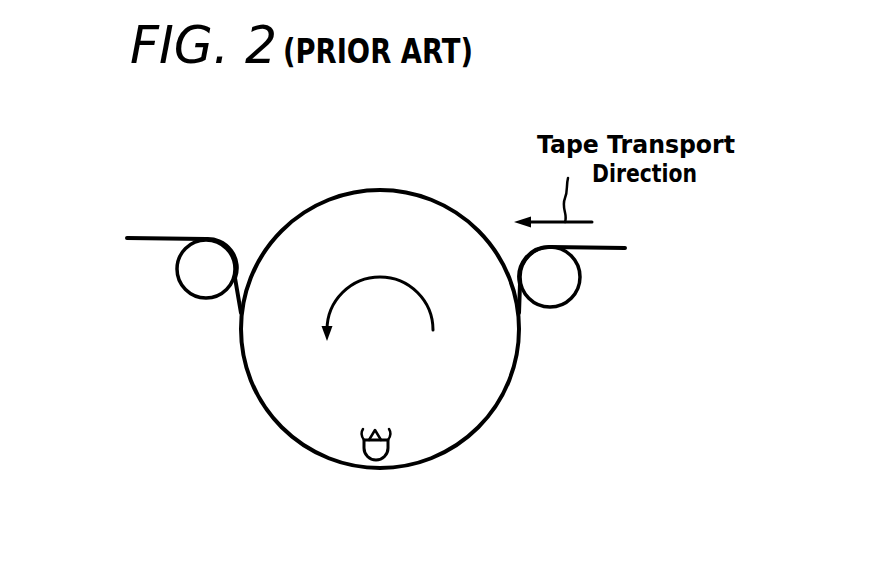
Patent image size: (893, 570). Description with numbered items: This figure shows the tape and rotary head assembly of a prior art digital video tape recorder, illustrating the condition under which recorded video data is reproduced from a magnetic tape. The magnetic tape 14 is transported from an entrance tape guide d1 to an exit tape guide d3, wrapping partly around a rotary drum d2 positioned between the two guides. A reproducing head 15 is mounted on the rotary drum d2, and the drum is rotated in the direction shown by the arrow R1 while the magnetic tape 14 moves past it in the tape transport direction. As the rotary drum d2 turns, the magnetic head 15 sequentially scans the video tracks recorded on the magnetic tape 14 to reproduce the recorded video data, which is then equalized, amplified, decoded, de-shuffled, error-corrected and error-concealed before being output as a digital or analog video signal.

The magnetic tape 14 is at (152, 235).
The rotary drum d2 is at (330, 212).
The exit tape guide d3 is at (188, 271).
The entrance tape guide d1 is at (550, 296).
The arrow R1 is at (375, 273).
The reproducing head 15 is at (402, 456).